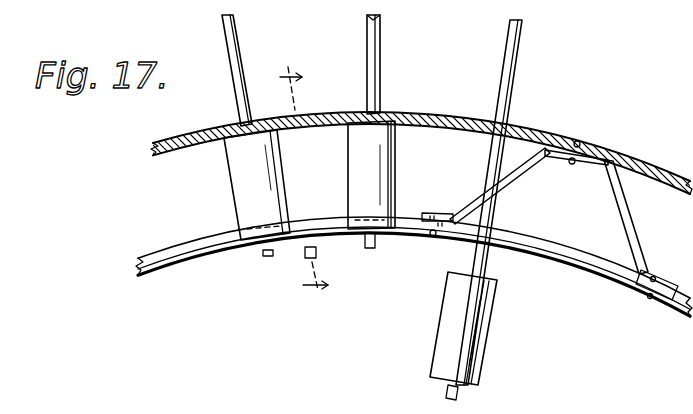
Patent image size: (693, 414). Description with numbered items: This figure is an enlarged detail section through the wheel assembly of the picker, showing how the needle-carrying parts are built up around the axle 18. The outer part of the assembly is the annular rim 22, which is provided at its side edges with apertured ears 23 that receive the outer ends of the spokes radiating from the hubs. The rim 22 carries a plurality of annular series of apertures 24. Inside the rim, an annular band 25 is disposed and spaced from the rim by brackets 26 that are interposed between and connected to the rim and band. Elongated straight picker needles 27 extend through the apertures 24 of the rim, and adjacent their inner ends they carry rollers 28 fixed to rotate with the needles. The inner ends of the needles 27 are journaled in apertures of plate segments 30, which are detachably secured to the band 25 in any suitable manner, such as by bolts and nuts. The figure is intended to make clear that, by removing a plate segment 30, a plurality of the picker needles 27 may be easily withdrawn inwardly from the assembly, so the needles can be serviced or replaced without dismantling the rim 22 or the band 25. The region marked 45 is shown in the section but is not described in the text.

The axle 18 is at (311, 177).
The annular rim 22 is at (167, 143).
The apertured ears 23 is at (0, 262).
The apertures 24 is at (515, 125).
The annular bands 25 is at (623, 278).
The brackets 26 is at (612, 153).
The picker needles 27 is at (366, 23).
The rollers 28 is at (362, 169).
The plate segments 30 is at (200, 265).
The adjacent member (off-sheet) 45 is at (0, 347).